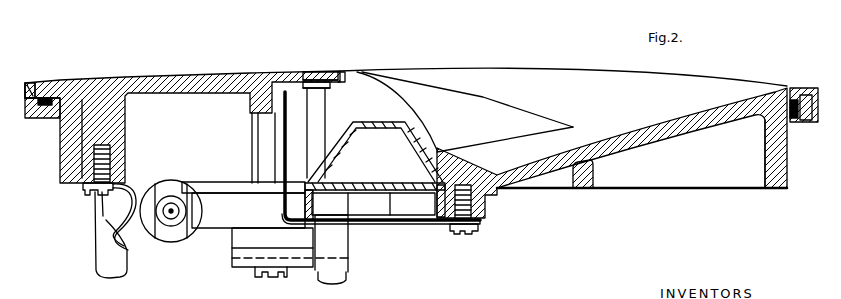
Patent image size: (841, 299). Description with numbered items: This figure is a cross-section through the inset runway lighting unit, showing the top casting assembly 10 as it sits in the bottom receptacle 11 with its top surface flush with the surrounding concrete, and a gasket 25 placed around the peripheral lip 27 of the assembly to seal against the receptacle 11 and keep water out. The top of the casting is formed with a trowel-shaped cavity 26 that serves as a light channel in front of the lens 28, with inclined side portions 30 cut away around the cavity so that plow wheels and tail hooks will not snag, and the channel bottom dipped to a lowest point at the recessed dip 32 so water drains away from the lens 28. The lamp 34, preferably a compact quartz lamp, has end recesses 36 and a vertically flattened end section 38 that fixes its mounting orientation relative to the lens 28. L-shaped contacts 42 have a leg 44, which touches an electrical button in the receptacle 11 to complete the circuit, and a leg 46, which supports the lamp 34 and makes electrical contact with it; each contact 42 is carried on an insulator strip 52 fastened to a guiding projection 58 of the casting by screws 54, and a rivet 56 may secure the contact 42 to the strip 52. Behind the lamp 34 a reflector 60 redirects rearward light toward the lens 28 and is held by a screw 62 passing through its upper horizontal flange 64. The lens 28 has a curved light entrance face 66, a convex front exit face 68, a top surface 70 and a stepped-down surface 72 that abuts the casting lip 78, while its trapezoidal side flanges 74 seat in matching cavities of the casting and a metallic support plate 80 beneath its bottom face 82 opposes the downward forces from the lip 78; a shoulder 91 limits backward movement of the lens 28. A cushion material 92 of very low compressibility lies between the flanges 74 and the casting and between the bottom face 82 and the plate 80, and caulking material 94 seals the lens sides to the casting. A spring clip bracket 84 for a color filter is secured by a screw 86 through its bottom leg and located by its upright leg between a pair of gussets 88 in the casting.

The top casting assembly 10 is at (186, 70).
The bottom receptacle 11 is at (40, 118).
The gasket 25 is at (31, 83).
The trowel-shaped cavity 26 is at (648, 128).
The peripheral lip 27 is at (50, 82).
The lens 28 is at (386, 82).
The inclined side portions 30 is at (456, 78).
The recessed dip 32 is at (494, 173).
The lamp 34 is at (188, 226).
The end recesses 36 is at (170, 220).
The flattened end section 38 is at (170, 190).
The contacts 42 is at (268, 220).
The leg 44 is at (333, 240).
The leg 46 is at (214, 190).
The insulator strip 52 is at (240, 268).
The screws 54 is at (277, 277).
The rivet 56 is at (334, 282).
The guiding projection 58 is at (246, 228).
The reflector 60 is at (104, 232).
The screw 62 is at (92, 195).
The upper horizontal flange 64 is at (118, 182).
The light entrance face 66 is at (315, 128).
The front exit face 68 is at (414, 118).
The top surface 70 is at (350, 76).
The top stepped down surface 72 is at (304, 74).
The trapezoidal side flanges 74 is at (388, 140).
The casting lip 78 is at (316, 78).
The support plate 80 is at (373, 204).
The bottom face 82 is at (398, 195).
The bracket 84 is at (428, 226).
The screw 86 is at (472, 234).
The gussets 88 is at (276, 82).
The shoulder 91 is at (312, 88).
The low-compressibility material 92 is at (358, 124).
The caulking material 94 is at (340, 72).